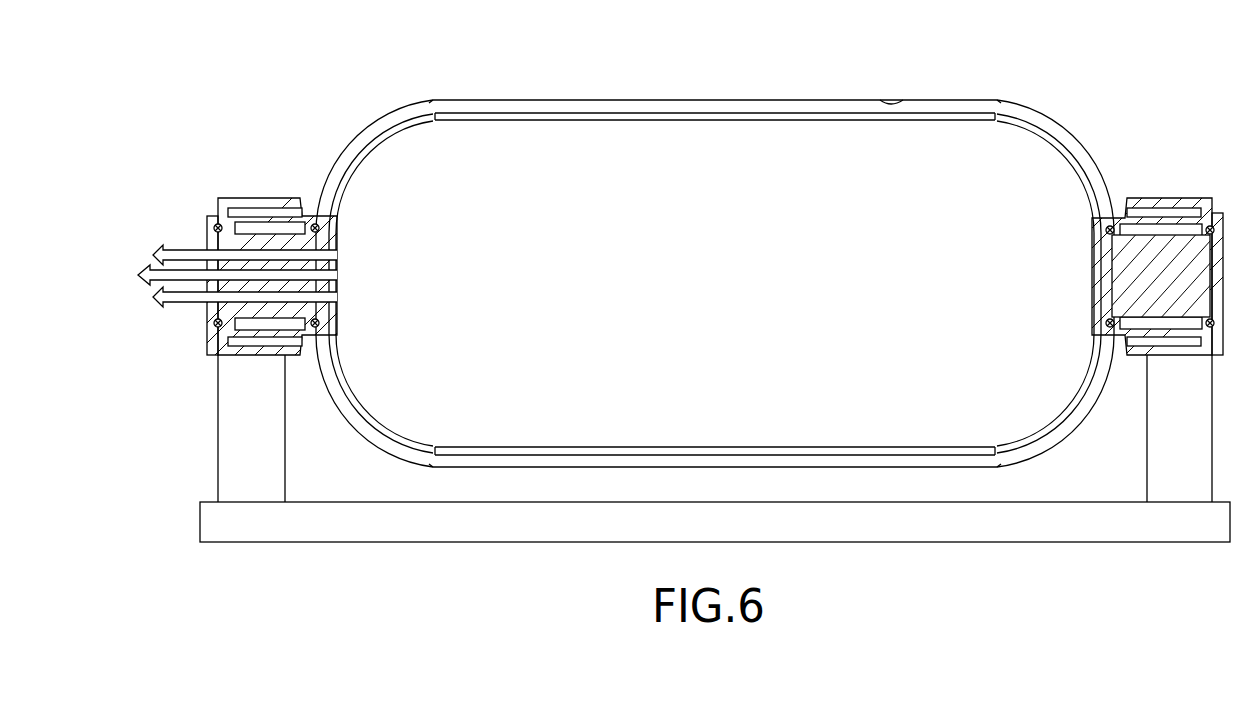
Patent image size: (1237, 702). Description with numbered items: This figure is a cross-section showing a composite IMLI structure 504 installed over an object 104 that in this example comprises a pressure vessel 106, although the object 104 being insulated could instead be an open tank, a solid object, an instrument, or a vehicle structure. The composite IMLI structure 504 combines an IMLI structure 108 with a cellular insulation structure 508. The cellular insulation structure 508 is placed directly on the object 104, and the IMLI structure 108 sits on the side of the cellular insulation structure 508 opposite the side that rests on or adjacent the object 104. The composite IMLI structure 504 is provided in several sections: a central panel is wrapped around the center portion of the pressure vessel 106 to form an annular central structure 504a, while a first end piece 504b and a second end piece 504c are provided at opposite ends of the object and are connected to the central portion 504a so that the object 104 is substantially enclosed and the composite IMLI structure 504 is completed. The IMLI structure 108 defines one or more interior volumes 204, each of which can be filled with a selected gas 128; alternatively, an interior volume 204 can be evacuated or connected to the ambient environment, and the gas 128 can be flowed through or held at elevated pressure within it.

The composite IMLI structure 504 is at (820, 82).
The annular central structure 504a is at (680, 100).
The first end piece 504b is at (350, 163).
The second end piece 504c is at (1038, 127).
The interior volume 204 is at (476, 108).
The cellular insulation structure 508 is at (536, 112).
The gas 128 is at (606, 112).
The IMLI structure 108 is at (966, 100).
The object 104 is at (1065, 198).
The pressure vessel 106 is at (1055, 260).